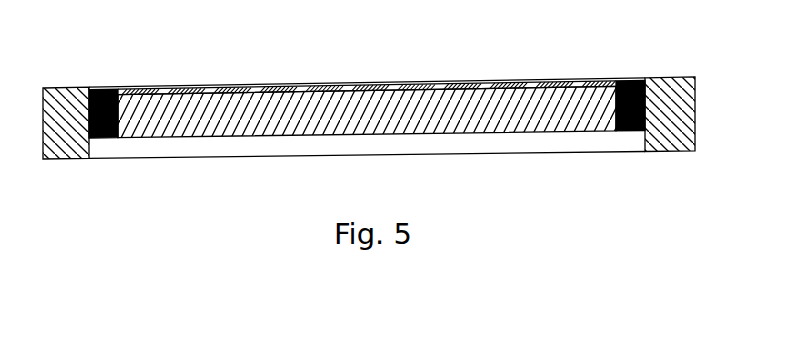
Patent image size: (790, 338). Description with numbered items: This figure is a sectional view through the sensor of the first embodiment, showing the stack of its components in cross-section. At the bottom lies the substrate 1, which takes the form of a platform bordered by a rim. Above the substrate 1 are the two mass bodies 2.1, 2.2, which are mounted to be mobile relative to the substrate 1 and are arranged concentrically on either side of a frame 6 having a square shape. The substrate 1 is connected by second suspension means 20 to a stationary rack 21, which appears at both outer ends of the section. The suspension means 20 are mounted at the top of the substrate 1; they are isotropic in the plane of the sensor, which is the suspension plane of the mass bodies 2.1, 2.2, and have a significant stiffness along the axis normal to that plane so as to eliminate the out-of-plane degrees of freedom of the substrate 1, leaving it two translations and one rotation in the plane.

The substrate 1 is at (505, 124).
The mass body 2.1 is at (365, 85).
The mass body 2.2 is at (163, 90).
The frame 6 is at (218, 91).
The second suspension means 20 is at (103, 140).
The stationary rack 21 is at (694, 113).